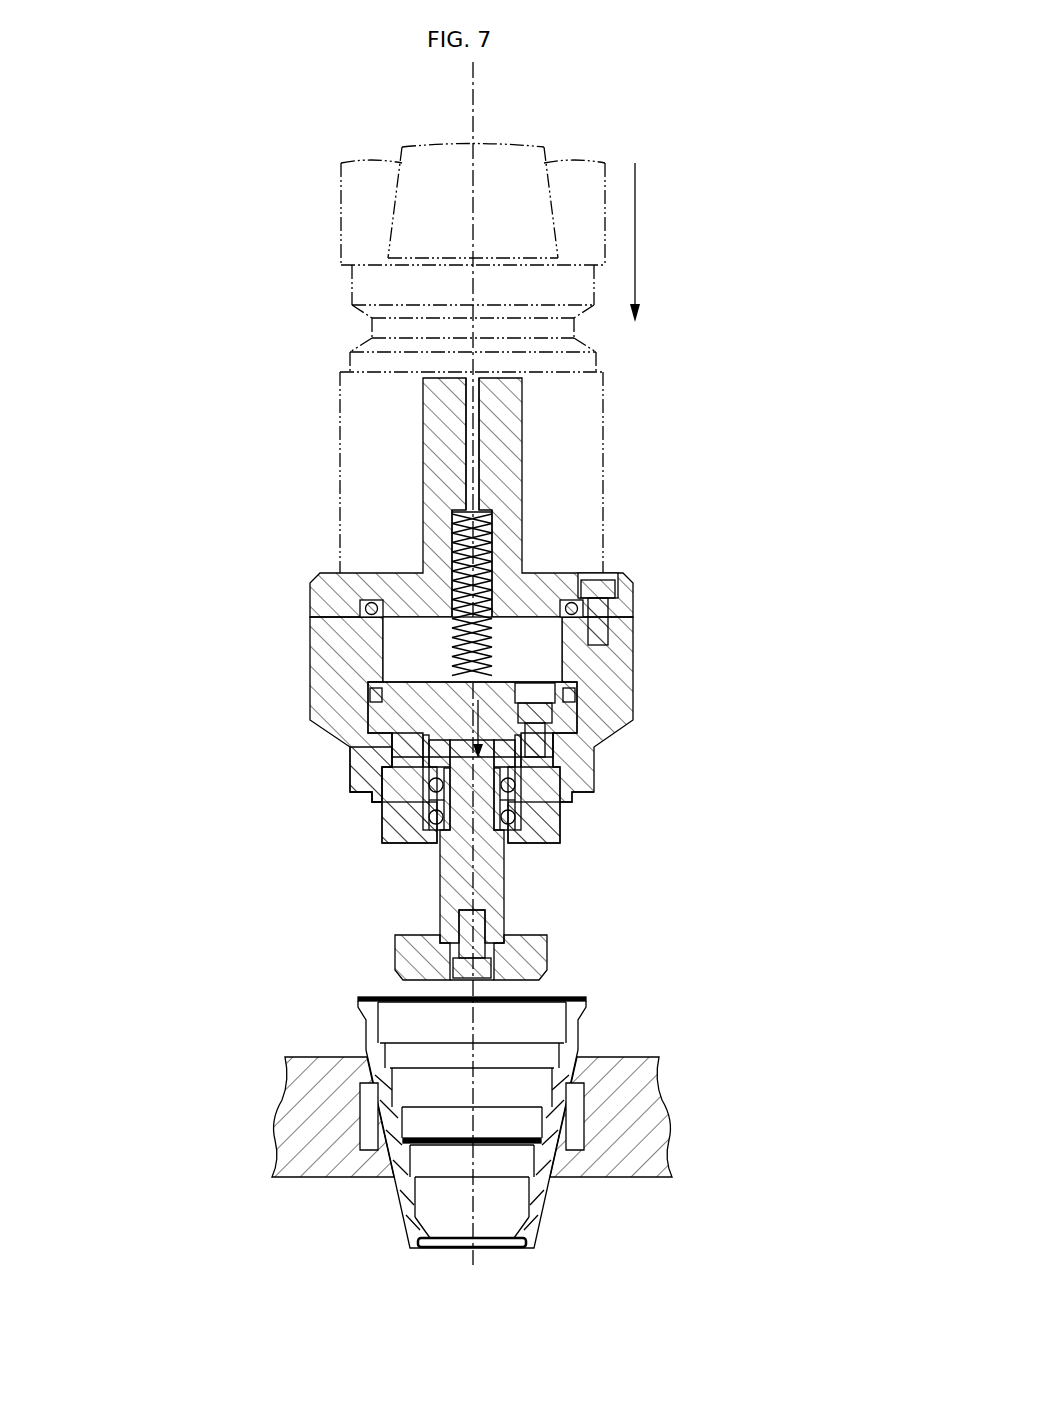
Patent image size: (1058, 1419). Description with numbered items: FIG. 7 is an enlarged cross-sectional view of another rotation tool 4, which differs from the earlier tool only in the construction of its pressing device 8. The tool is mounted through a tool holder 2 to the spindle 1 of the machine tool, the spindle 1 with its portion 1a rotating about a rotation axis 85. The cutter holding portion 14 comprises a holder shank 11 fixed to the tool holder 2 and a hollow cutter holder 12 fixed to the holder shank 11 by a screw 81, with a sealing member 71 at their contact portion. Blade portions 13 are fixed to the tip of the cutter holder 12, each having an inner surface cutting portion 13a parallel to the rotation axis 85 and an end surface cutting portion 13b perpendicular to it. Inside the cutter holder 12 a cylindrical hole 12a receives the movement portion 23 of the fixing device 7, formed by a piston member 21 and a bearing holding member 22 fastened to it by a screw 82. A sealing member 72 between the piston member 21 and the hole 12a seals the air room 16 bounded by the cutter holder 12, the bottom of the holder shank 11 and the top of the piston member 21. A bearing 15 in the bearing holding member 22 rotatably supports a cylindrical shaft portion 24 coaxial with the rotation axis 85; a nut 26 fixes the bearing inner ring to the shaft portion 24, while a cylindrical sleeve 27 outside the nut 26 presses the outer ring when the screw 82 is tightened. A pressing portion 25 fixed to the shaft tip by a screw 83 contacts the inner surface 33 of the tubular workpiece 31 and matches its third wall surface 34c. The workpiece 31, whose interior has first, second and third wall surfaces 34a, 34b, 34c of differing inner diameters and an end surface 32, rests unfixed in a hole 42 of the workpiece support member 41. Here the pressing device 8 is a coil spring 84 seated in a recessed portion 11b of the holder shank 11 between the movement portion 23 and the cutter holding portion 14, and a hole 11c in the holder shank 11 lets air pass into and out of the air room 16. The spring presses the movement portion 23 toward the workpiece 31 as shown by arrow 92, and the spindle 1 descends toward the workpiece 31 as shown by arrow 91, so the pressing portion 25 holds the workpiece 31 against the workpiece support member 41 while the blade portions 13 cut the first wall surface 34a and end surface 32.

The spindle 1 is at (341, 190).
The tapered hole 1a is at (400, 240).
The tool holder 2 is at (340, 409).
The another rotation tool 4 is at (655, 540).
The fixing device 7 is at (408, 699).
The pressing device 8 is at (495, 652).
The holder shank 11 is at (328, 588).
The recessed portion 11b is at (452, 542).
The hole 11c is at (466, 403).
The cutter holder 12 is at (320, 628).
The cylindrical hole 12a is at (390, 660).
The blade portion 13 is at (419, 817).
The inner surface cutting portion 13a is at (375, 822).
The end surface cutting portion 13b is at (370, 798).
The cutter holding portion 14 is at (420, 579).
The bearing 15 is at (512, 815).
The air room 16 is at (523, 633).
The piston member 21 is at (400, 713).
The bearing holding member 22 is at (405, 757).
The movement portion 23 is at (443, 755).
The shaft portion 24 is at (447, 865).
The pressing portion 25 is at (413, 948).
The nut 26 is at (528, 773).
The cylindrical sleeve 27 is at (413, 767).
The workpiece 31 is at (533, 1197).
The end surface 32 is at (573, 997).
The inner surface 33 is at (395, 1023).
The first wall surface 34a is at (548, 1032).
The second wall surface 34b is at (540, 1057).
The third wall surface 34c is at (530, 1088).
The workpiece support member 41 is at (297, 1102).
The hole 42 is at (375, 1158).
The sealing member 71 is at (578, 598).
The sealing member 72 is at (575, 697).
The screw 81 is at (605, 586).
The screw 82 is at (537, 713).
The screw 83 is at (482, 913).
The coil spring 84 is at (462, 517).
The rotation axis 85 is at (473, 100).
The arrow 91 is at (636, 238).
The arrow 92 is at (482, 700).